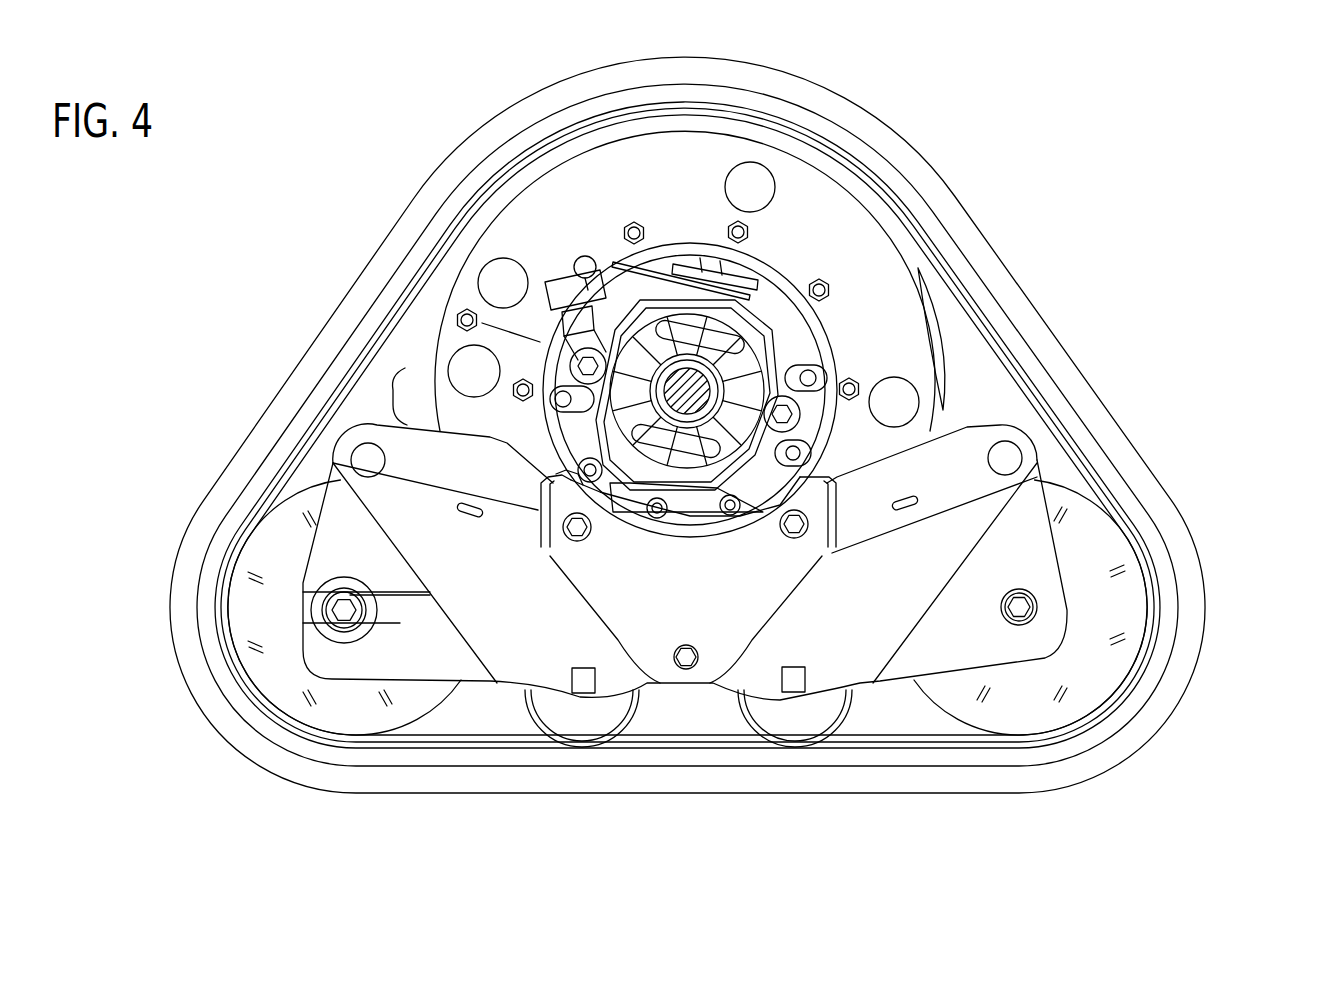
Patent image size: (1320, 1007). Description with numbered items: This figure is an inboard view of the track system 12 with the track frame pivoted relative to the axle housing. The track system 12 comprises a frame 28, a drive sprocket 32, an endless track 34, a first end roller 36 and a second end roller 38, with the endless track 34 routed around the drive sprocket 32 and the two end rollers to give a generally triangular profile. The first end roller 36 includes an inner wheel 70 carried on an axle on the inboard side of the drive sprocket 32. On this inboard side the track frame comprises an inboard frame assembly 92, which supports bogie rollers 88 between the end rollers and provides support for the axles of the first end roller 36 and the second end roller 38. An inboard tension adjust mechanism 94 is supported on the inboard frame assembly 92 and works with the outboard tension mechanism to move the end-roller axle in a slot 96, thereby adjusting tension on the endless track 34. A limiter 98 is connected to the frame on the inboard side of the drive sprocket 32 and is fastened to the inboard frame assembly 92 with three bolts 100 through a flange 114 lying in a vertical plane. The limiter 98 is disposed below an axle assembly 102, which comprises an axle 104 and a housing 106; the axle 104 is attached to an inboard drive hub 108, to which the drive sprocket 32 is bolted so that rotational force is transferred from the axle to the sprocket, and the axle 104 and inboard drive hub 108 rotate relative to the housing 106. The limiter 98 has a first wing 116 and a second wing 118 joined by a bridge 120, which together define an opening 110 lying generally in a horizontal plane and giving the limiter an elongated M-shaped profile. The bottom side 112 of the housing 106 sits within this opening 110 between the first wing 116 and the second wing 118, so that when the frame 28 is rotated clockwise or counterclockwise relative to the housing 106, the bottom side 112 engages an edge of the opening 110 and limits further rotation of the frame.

The track system 12 is at (684, 421).
The frame 28 is at (1097, 608).
The drive sprocket 32 is at (568, 281).
The endless track 34 is at (687, 425).
The first end roller 36 is at (619, 425).
The second end roller 38 is at (745, 425).
The inner wheel 70 is at (271, 607).
The bogie rollers 88 is at (685, 645).
The inboard frame assembly 92 is at (1116, 492).
The inboard tension adjust mechanism 94 is at (296, 708).
The slot 96 is at (276, 696).
The limiter 98 is at (743, 646).
The bolts 100 is at (732, 687).
The axle assembly 102 is at (795, 328).
The axle 104 is at (770, 163).
The housing 106 is at (494, 227).
The inboard drive hub 108 is at (830, 181).
The opening 110 is at (828, 681).
The bottom side 112 is at (746, 676).
The flange 114 is at (609, 674).
The first wing 116 is at (345, 480).
The second wing 118 is at (985, 408).
The bridge 120 is at (425, 364).